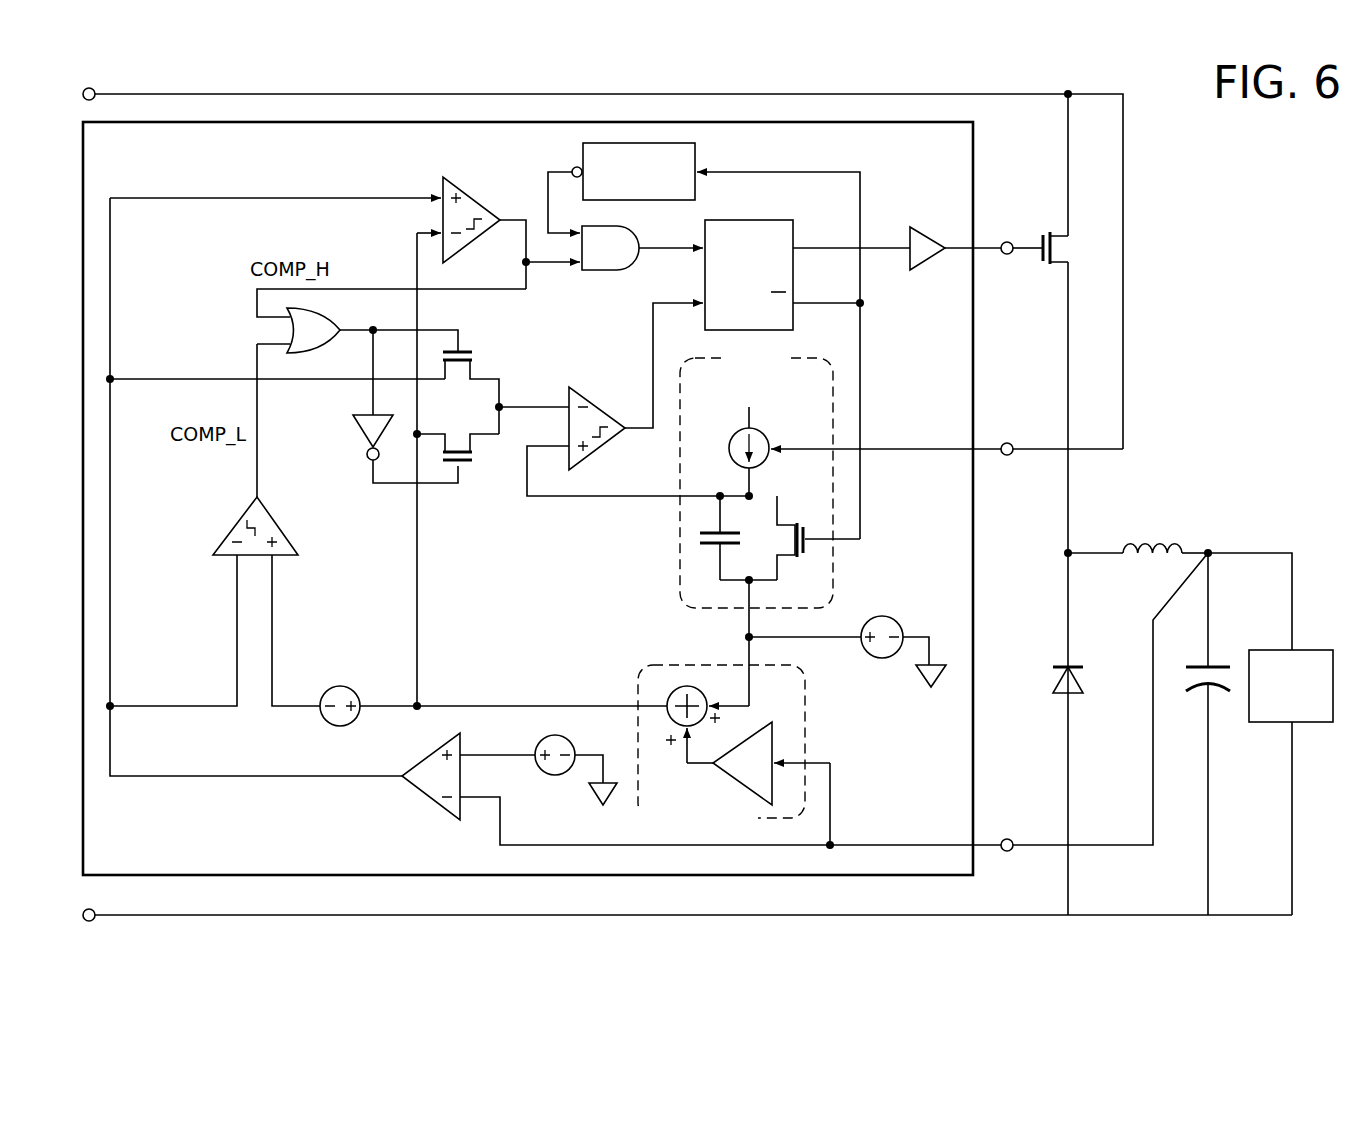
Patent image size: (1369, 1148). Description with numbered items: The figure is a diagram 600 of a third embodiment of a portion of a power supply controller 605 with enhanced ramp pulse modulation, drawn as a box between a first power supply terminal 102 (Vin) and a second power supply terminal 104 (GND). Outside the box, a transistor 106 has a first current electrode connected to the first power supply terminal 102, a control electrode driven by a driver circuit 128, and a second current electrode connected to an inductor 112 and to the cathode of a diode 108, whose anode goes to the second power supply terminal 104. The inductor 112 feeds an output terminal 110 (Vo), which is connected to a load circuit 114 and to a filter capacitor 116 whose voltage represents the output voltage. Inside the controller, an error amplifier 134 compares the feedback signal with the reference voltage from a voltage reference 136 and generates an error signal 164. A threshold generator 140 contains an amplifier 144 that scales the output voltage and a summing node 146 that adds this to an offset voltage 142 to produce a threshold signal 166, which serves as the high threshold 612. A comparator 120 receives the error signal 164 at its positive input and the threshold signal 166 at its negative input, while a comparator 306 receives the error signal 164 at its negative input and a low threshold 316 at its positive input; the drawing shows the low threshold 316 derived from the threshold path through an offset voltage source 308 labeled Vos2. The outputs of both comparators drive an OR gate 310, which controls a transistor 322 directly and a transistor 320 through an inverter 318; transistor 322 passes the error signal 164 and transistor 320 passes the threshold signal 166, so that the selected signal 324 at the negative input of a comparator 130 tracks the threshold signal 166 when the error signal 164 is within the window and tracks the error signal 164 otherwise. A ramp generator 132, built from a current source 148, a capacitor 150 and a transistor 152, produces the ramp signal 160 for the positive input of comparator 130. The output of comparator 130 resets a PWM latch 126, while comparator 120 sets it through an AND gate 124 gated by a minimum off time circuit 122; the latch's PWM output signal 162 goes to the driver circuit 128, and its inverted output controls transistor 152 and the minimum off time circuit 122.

The first power supply terminal 102 is at (193, 95).
The second power supply terminal 104 is at (193, 918).
The transistor 106 is at (1060, 242).
The diode 108 is at (1076, 666).
The output terminal 110 is at (1252, 553).
The inductor 112 is at (1152, 532).
The load circuit 114 is at (1322, 651).
The filter capacitor 116 is at (1196, 664).
The comparator 120 is at (467, 190).
The minimum off time circuit 122 is at (695, 156).
The AND gate 124 is at (611, 272).
The PWM latch 126 is at (766, 220).
The driver circuit 128 is at (922, 236).
The comparator 130 is at (598, 406).
The ramp generator 132 is at (680, 594).
The error amplifier 134 is at (425, 750).
The voltage reference 136 is at (549, 775).
The threshold generator 140 is at (805, 730).
The offset voltage 142 is at (884, 658).
The amplifier 144 is at (768, 729).
The summing node 146 is at (669, 700).
The current source 148 is at (726, 450).
The capacitor 150 is at (716, 546).
The transistor 152 is at (802, 525).
The ramp signal 160 is at (632, 527).
The PWM output signal 162 is at (852, 282).
The error signal 164 is at (292, 803).
The threshold signal 166 is at (492, 700).
The comparator 306 is at (236, 509).
The offset voltage source Vos2 308 is at (346, 687).
The OR gate 310 is at (325, 351).
The low threshold 316 is at (283, 610).
The inverter 318 is at (358, 435).
The transistor 320 is at (468, 466).
The transistor 322 is at (457, 366).
The selected signal 324 is at (560, 400).
The diagram 600 is at (1224, 188).
The power supply controller 605 is at (83, 292).
The high threshold 612 is at (430, 586).